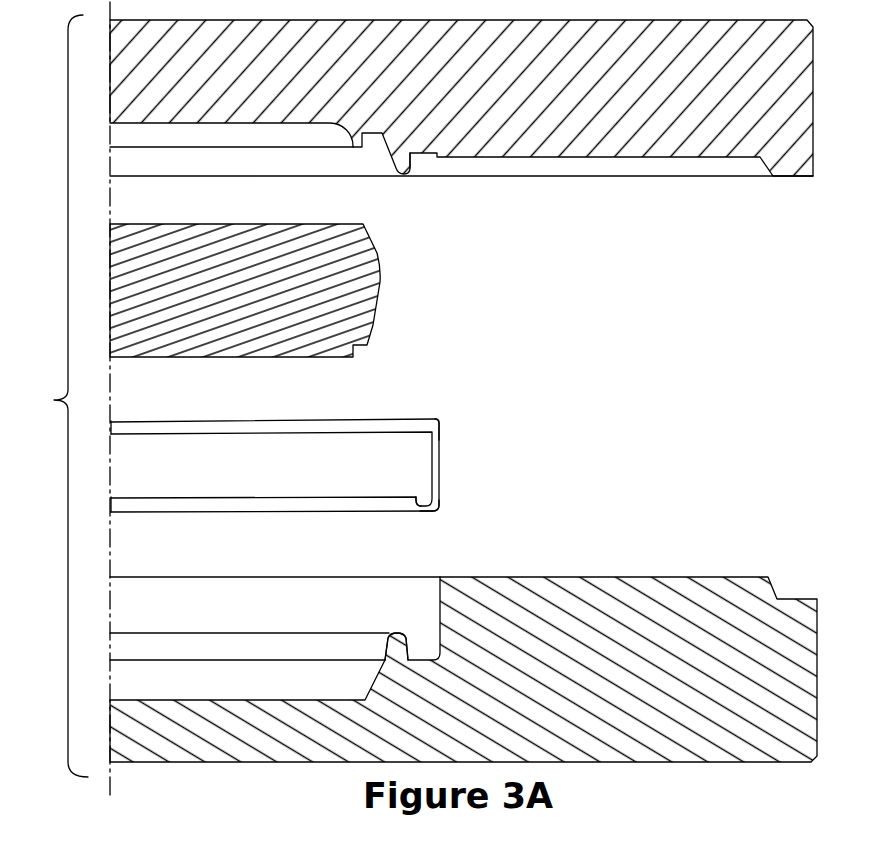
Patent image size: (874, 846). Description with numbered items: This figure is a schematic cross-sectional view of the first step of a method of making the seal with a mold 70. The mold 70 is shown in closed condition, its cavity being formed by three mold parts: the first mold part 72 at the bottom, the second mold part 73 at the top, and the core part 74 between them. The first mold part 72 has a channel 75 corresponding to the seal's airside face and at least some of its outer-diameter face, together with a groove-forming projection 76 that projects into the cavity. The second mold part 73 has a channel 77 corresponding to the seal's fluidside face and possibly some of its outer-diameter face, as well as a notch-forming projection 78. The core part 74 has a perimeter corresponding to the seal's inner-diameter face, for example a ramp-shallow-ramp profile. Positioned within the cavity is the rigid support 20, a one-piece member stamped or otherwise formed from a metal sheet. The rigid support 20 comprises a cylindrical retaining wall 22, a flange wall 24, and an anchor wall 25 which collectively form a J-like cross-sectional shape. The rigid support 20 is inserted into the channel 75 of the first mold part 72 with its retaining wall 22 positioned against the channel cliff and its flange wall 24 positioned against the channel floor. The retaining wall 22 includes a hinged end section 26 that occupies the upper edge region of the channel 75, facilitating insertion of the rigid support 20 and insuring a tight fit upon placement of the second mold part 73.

The rigid support 20 is at (344, 470).
The cylindrical retaining wall 22 is at (440, 470).
The flange wall 24 is at (432, 513).
The anchor wall 25 is at (421, 494).
The hinged end section 26 is at (437, 423).
The mold 70 is at (64, 398).
The first mold part 72 is at (620, 683).
The second mold part 73 is at (615, 106).
The core part 74 is at (318, 302).
The channel 75 is at (272, 617).
The groove-forming projection 76 is at (407, 634).
The channel 77 is at (214, 167).
The notch-forming projection 78 is at (411, 163).